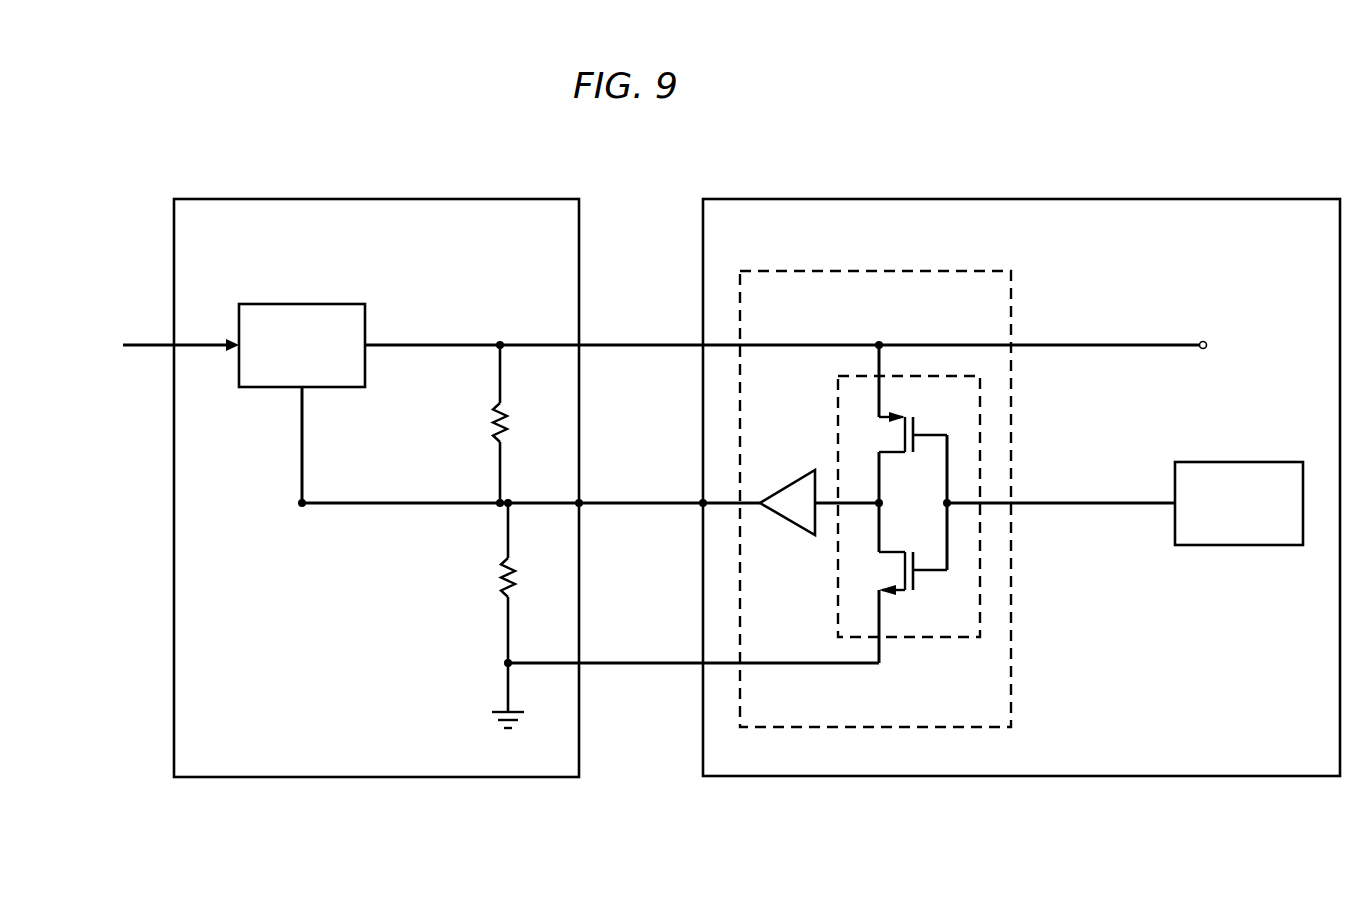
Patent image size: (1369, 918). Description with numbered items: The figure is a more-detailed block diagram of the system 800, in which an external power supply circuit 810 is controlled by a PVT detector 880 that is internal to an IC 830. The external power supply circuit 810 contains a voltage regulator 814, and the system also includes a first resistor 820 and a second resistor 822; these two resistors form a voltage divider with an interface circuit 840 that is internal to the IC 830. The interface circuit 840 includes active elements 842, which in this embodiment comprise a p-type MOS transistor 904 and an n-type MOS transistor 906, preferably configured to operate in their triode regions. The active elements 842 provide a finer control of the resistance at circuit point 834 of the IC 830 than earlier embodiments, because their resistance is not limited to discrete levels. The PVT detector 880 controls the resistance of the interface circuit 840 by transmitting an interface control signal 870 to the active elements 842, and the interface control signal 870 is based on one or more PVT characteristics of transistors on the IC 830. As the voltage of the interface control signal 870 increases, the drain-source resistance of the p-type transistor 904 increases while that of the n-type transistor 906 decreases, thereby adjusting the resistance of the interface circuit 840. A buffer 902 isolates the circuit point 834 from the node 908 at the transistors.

The system 800 is at (1086, 162).
The external power supply circuit 810 is at (519, 197).
The voltage regulator 814 is at (302, 304).
The first resistor R1 820 is at (494, 425).
The second resistor R2 822 is at (500, 580).
The IC 830 is at (1282, 197).
The circuit point 834 is at (700, 507).
The interface circuit 840 is at (878, 271).
The active elements 842 is at (913, 639).
The interface control signal 870 is at (1097, 501).
The PVT detector 880 is at (1238, 462).
The buffer 902 is at (792, 482).
The p-type MOS transistor Q1 904 is at (918, 418).
The n-type MOS transistor Q2 906 is at (915, 585).
The node 908 is at (881, 506).